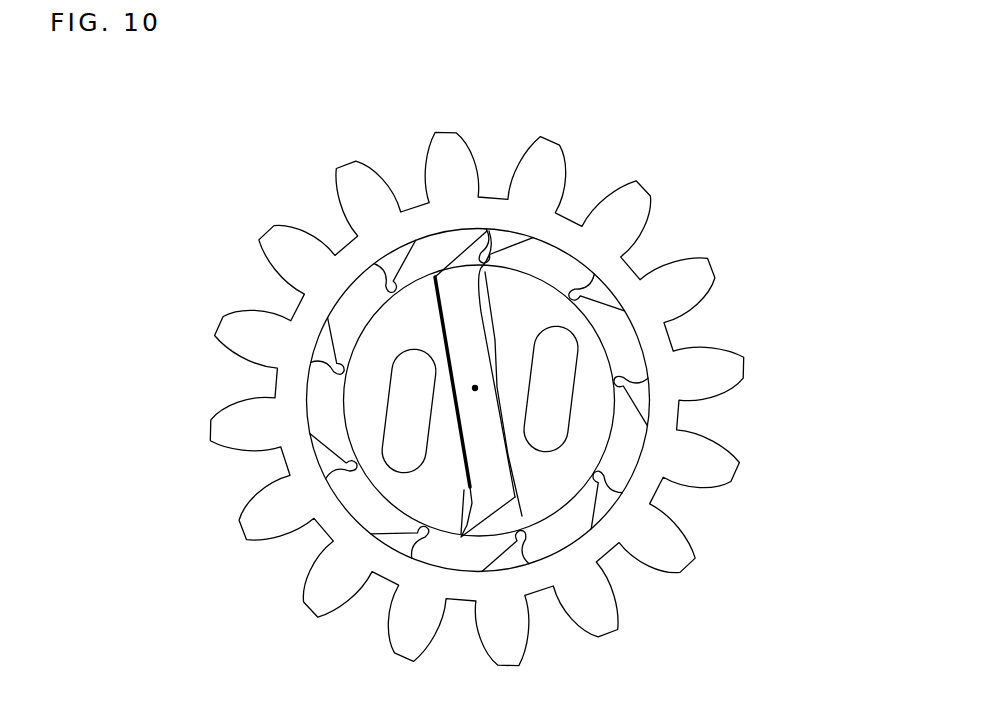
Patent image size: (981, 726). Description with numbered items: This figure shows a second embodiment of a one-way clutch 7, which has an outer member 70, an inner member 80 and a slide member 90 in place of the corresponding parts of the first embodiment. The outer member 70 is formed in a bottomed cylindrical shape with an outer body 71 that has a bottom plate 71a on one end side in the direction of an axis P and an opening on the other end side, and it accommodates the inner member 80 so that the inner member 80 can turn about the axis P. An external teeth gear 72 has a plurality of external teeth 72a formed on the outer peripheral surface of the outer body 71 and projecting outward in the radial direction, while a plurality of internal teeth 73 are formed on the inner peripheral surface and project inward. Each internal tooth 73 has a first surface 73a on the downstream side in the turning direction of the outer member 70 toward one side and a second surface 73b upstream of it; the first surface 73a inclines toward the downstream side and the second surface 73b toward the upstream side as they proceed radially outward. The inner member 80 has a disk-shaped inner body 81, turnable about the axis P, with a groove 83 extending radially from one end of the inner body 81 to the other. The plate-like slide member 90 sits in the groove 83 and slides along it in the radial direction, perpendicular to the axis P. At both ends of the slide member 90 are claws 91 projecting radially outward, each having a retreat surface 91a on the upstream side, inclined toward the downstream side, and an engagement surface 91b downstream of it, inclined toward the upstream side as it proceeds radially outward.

The one-way clutch 7 is at (214, 494).
The outer member 70 is at (680, 502).
The outer body 71 is at (672, 415).
The bottom plate 71a is at (360, 502).
The external teeth gear 72 is at (694, 571).
The external teeth 72a is at (744, 468).
The internal teeth 73 is at (600, 293).
The first surface 73a is at (612, 321).
The second surface 73b is at (580, 292).
The inner member 80 is at (335, 391).
The inner body 81 is at (580, 543).
The groove 83 is at (548, 496).
The slide member 90 is at (453, 312).
The claws 91 is at (487, 228).
The retreat surface 91a is at (462, 250).
The engagement surface 91b is at (498, 252).
The axis P is at (475, 384).